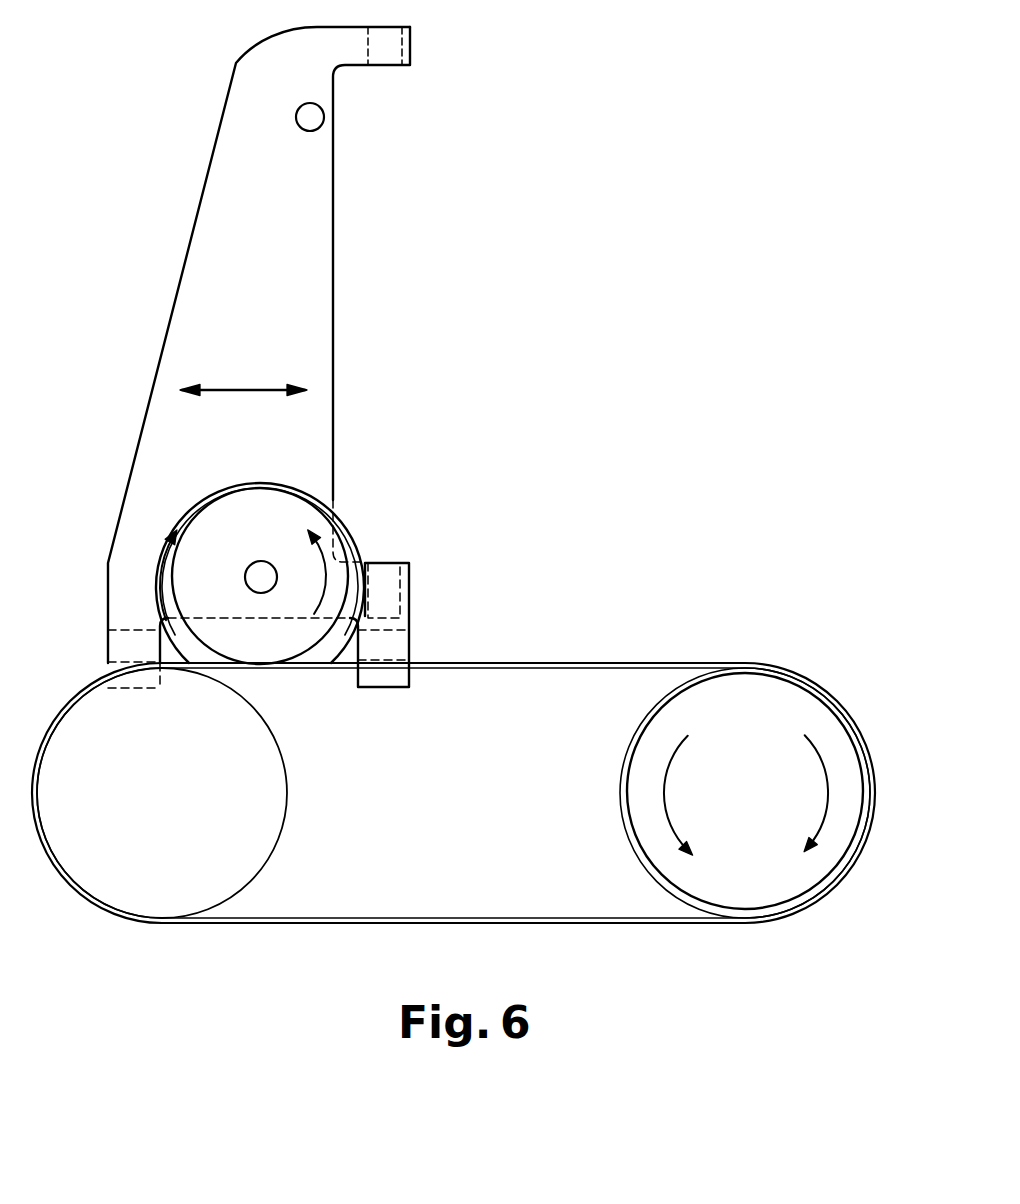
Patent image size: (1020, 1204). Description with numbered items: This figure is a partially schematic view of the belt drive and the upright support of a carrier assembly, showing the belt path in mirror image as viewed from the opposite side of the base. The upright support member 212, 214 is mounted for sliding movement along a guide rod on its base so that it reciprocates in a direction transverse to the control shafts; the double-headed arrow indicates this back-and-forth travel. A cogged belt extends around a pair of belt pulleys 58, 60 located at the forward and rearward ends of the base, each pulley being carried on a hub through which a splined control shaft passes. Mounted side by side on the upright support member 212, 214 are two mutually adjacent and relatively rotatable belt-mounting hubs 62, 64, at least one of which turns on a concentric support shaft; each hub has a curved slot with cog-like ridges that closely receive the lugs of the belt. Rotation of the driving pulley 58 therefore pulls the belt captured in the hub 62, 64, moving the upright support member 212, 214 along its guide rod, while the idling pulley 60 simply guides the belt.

The belt pulley 58 is at (747, 793).
The belt pulley 60 is at (175, 805).
The belt-mounting hub 62 is at (273, 540).
The belt-mounting hub 64 is at (178, 513).
The upright support member 212 is at (259, 357).
The upright support member 214 is at (305, 269).